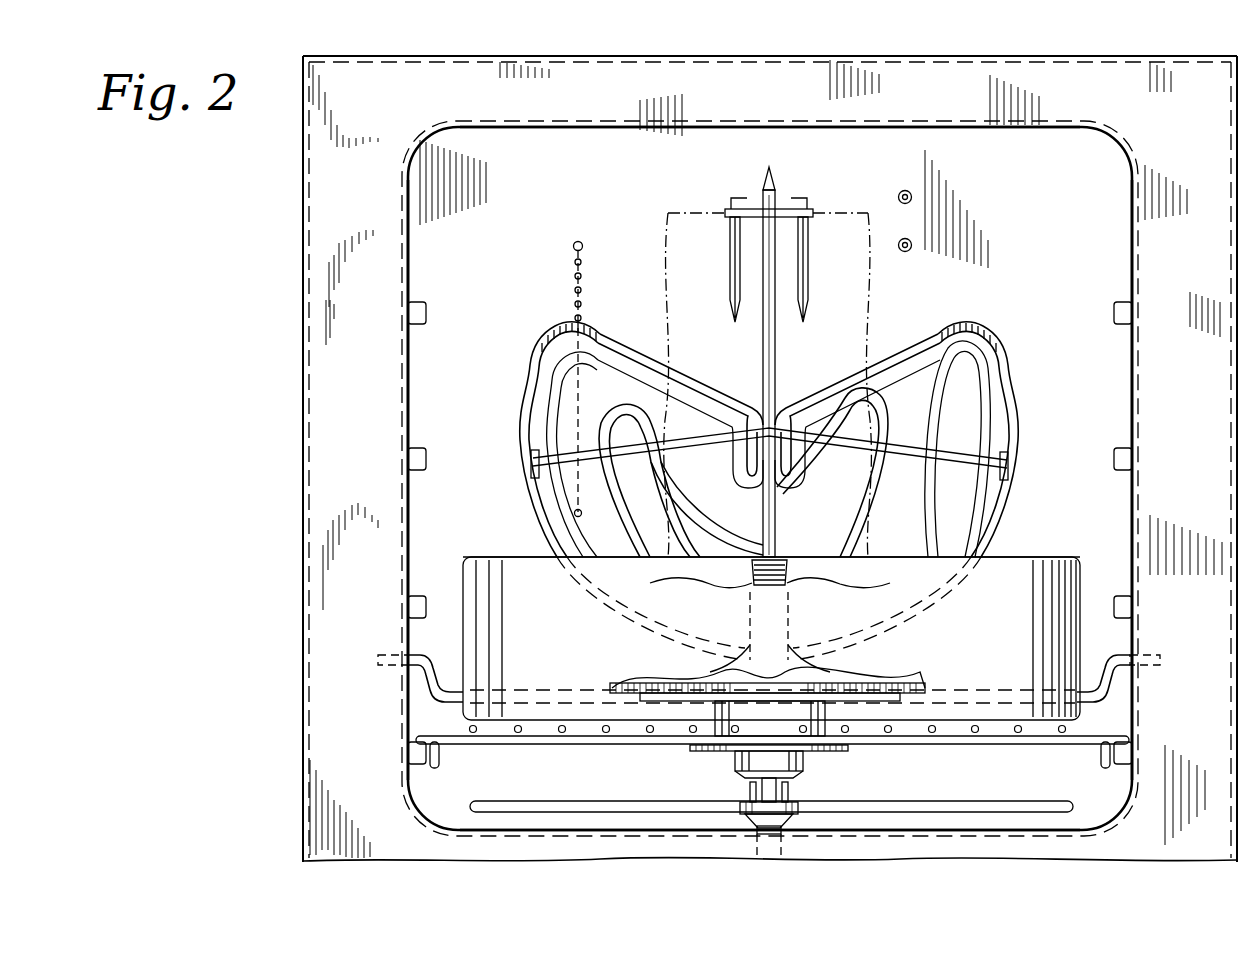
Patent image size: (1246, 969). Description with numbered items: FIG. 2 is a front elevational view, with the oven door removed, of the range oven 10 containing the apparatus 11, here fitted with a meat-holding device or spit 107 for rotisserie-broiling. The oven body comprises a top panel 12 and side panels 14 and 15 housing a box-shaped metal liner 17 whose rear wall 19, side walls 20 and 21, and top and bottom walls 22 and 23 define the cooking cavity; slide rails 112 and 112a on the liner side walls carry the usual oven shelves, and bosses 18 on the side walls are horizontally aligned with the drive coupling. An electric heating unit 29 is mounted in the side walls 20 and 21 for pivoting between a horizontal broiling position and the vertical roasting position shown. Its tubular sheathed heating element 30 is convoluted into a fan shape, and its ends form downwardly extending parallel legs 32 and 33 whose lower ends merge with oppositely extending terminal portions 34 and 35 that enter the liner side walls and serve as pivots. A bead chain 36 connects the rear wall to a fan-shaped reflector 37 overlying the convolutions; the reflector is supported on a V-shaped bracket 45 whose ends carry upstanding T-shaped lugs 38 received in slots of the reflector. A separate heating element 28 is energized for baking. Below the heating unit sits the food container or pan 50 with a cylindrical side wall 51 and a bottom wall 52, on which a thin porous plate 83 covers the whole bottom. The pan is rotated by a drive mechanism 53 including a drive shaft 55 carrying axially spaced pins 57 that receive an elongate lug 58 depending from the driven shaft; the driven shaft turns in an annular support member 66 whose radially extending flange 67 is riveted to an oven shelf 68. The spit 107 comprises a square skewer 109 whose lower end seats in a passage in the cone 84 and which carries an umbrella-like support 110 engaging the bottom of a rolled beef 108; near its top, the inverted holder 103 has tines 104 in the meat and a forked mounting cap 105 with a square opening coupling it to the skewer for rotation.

The range oven 10 is at (298, 287).
The apparatus 11 is at (506, 545).
The top panel 12 is at (527, 62).
The side panel 14 is at (303, 404).
The side panel 15 is at (1232, 379).
The metal liner 17 is at (1046, 133).
The bosses 18 is at (410, 753).
The rear wall 19 is at (540, 204).
The side wall 20 is at (410, 261).
The side wall 21 is at (1130, 236).
The top wall 22 is at (955, 129).
The bottom wall 23 is at (542, 829).
The heating element 28 is at (599, 802).
The electric heating unit 29 is at (985, 328).
The electric heating element 30 is at (545, 368).
The leg 32 is at (1108, 683).
The leg 33 is at (430, 683).
The terminal portion 34 is at (1122, 655).
The terminal portion 35 is at (424, 655).
The bead chain 36 is at (583, 263).
The reflector 37 is at (948, 335).
The T-shaped lugs 38 is at (531, 464).
The V-shaped bracket 45 is at (722, 478).
The food container or pan 50 is at (1020, 550).
The cylindrical side wall 51 is at (1082, 590).
The bottom wall 52 is at (906, 703).
The drive mechanism 53 is at (838, 763).
The drive shaft 55 is at (786, 831).
The pins 57 is at (750, 791).
The elongate lug 58 is at (777, 791).
The annular support member 66 is at (735, 762).
The radially extending flange 67 is at (692, 749).
The oven shelf 68 is at (522, 743).
The thin plate 83 is at (626, 678).
The cone 84 is at (808, 582).
The holder 103 is at (734, 205).
The tines 104 is at (730, 263).
The forked mounting cap 105 is at (812, 208).
The meat-holding device or spit 107 is at (772, 178).
The rolled beef 108 is at (668, 337).
The skewer 109 is at (776, 357).
The umbrella-like support 110 is at (786, 534).
The slide rails 112 is at (410, 314).
The slide rails 112a is at (410, 461).